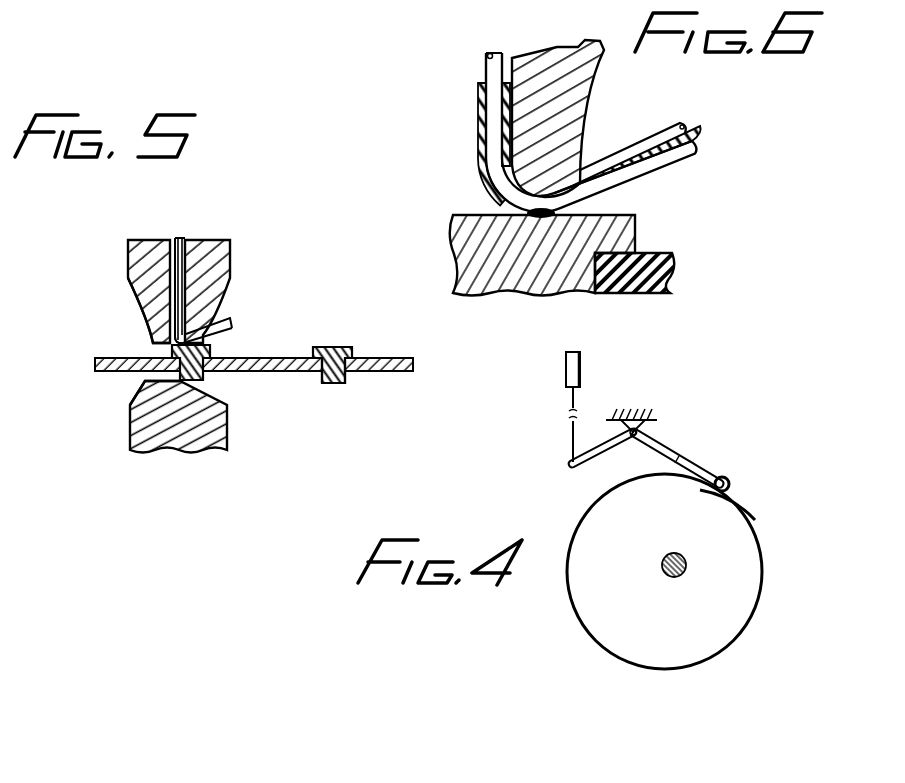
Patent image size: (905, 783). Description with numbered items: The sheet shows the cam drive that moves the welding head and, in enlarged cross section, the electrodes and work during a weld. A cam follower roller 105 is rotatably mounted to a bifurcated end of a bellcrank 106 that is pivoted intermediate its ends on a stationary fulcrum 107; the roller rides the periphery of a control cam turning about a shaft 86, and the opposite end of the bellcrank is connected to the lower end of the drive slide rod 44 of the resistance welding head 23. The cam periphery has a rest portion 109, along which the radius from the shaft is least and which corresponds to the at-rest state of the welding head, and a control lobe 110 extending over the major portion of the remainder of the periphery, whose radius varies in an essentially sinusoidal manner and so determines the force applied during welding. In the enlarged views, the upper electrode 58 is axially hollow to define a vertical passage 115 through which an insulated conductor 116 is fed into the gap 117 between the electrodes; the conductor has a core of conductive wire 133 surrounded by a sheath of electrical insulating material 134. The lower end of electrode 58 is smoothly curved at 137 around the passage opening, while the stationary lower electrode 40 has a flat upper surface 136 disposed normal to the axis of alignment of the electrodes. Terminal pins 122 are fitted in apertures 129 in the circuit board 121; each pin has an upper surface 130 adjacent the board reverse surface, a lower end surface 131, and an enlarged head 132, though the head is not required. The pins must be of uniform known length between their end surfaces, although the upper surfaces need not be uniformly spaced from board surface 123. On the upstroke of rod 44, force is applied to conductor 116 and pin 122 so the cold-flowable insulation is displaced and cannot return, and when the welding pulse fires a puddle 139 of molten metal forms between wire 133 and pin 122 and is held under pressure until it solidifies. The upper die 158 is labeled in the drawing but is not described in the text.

In FIG. 4, the resistance welding head 23 is at (581, 362).
In FIG. 5, the lower electrode 40 is at (135, 435).
In FIG. 4, the drive slide rod 44 is at (573, 440).
In FIG. 6, the upper electrode 58 is at (583, 113).
In FIG. 4, the shaft 86 is at (674, 578).
In FIG. 4, the cam follower roller 105 is at (730, 479).
In FIG. 4, the bellcrank 106 is at (668, 454).
In FIG. 4, the stationary fulcrum 107 is at (648, 432).
In FIG. 4, the rest portion 109 is at (735, 497).
In FIG. 4, the control lobe 110 is at (598, 650).
In FIG. 6, the vertical passage 115 is at (478, 97).
In FIG. 5, the vertical passage 115 is at (173, 292).
In FIG. 6, the insulated conductor 116 is at (487, 160).
In FIG. 5, the insulated conductor 116 is at (232, 325).
In FIG. 5, the gap 117 is at (157, 350).
In FIG. 6, the circuit board 121 is at (658, 253).
In FIG. 5, the circuit board 121 is at (375, 377).
In FIG. 6, the terminal pin 122 is at (483, 265).
In FIG. 5, the terminal pin 122 is at (220, 373).
In FIG. 5, the board surface 123 is at (398, 357).
In FIG. 5, the aperture 129 is at (330, 386).
In FIG. 5, the upper surface 130 is at (343, 352).
In FIG. 5, the lower end surface 131 is at (336, 385).
In FIG. 5, the enlarged head 132 is at (334, 347).
In FIG. 6, the conductive wire 133 is at (702, 126).
In FIG. 6, the sheath of electrical insulating material 134 is at (641, 138).
In FIG. 5, the flat surface 136 is at (150, 380).
In FIG. 5, the smoothly curved lower end 137 is at (155, 338).
In FIG. 6, the puddle 139 is at (541, 217).
In FIG. 5, the upper die 158 is at (228, 248).